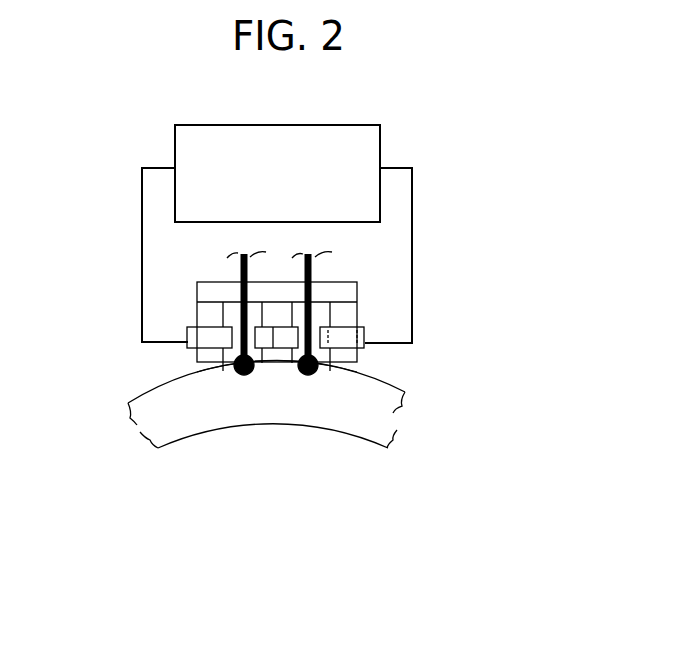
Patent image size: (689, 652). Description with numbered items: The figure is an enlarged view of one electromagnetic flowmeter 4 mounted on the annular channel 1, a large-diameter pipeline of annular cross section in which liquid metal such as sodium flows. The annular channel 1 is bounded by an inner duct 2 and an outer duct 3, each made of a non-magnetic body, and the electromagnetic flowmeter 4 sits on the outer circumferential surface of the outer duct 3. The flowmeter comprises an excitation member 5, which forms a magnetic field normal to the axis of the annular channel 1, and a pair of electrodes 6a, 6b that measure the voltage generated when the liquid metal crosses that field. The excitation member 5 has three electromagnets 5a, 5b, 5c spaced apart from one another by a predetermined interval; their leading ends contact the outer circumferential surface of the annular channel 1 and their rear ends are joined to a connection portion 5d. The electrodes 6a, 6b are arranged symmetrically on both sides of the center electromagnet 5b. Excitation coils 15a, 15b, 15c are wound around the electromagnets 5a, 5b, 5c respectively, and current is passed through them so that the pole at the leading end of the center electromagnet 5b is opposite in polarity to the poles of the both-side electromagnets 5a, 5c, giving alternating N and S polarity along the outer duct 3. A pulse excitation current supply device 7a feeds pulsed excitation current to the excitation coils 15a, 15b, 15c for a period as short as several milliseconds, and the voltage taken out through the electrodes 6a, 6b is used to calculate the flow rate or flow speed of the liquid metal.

The pulse excitation current supply device 7a is at (325, 125).
The electromagnetic flowmeter 4 is at (377, 256).
The excitation member 5 is at (367, 304).
The electromagnet 5a is at (357, 366).
The center electromagnet 5b is at (283, 364).
The electromagnet 5c is at (208, 318).
The connection portion 5d is at (213, 292).
The electrode 6a is at (237, 269).
The electrode 6b is at (318, 269).
The excitation coil 15a is at (365, 332).
The excitation coil 15b is at (272, 364).
The excitation coil 15c is at (188, 347).
The outer duct 3 is at (402, 390).
The annular channel 1 is at (183, 420).
The inner duct 2 is at (370, 445).